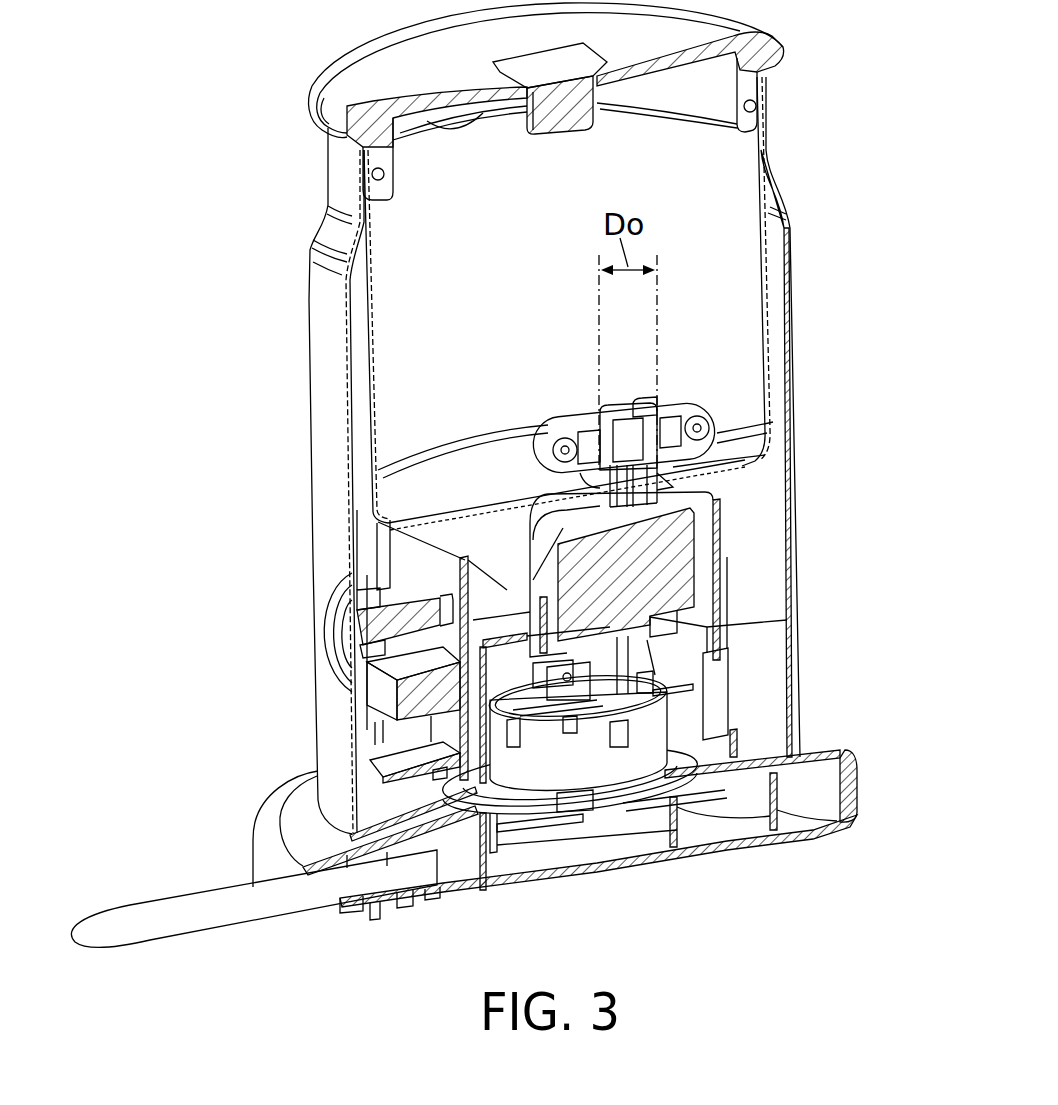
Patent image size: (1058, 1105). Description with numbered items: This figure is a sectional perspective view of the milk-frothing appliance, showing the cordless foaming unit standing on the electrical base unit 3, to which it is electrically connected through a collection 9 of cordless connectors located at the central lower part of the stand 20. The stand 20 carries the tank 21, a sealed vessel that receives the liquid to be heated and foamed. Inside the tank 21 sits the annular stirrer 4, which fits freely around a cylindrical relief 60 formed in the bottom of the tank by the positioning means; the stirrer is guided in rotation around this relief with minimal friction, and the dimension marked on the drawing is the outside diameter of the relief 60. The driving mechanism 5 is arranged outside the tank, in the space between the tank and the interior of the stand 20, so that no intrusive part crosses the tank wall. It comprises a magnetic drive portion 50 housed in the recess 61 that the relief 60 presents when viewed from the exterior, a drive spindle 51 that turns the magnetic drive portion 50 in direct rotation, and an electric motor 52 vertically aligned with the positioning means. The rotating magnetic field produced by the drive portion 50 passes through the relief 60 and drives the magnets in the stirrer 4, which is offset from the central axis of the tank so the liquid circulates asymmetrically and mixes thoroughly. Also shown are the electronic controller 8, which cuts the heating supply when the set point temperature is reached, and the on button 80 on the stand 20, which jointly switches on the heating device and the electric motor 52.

The electrical base unit 3 is at (865, 748).
The stirrer 4 is at (546, 410).
The driving mechanism 5 is at (758, 547).
The electronic controller 8 is at (375, 690).
The collection of cordless connectors 9 is at (613, 762).
The stand 20 is at (805, 712).
The tank 21 is at (780, 270).
The magnetic drive portion 50 is at (712, 456).
The drive spindle 51 is at (618, 512).
The electric motor 52 is at (690, 582).
The relief 60 is at (627, 410).
The recess 61 is at (660, 408).
The on button 80 is at (345, 624).